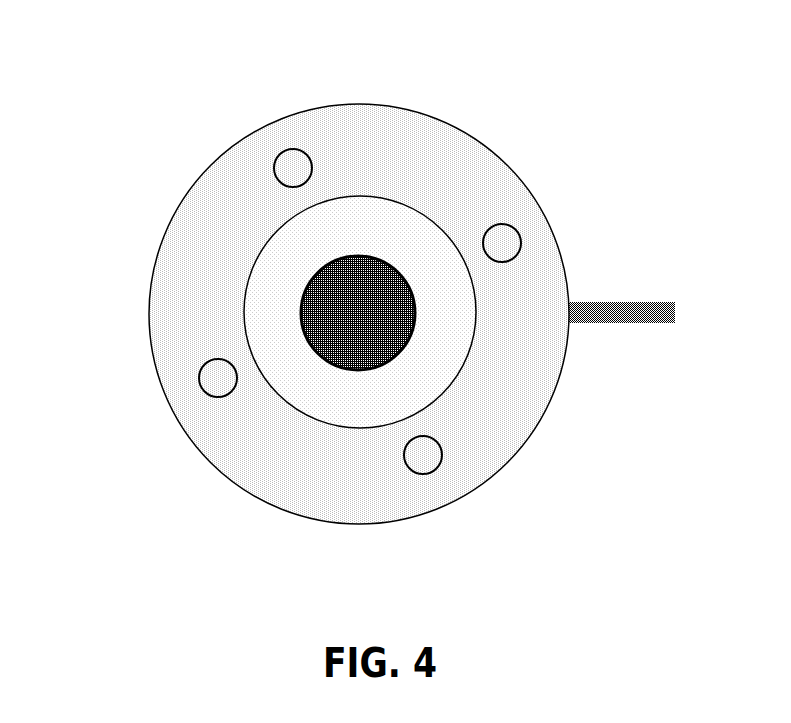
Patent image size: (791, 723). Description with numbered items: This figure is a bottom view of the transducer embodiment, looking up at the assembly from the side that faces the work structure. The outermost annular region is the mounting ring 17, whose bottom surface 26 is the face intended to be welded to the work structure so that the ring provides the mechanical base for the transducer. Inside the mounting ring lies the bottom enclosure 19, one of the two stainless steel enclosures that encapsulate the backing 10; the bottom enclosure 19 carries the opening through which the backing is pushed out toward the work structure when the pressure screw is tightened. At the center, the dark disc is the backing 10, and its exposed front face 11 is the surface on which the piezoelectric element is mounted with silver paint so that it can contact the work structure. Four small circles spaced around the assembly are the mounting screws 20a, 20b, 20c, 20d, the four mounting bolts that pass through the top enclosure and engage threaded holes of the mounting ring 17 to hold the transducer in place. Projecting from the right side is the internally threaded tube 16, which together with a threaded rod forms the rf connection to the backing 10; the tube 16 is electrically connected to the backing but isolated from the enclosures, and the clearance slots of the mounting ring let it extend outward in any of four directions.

The backing 10 is at (474, 346).
The front face of the backing 11 is at (480, 391).
The internally threaded tube 16 is at (659, 351).
The mounting ring 17 is at (363, 271).
The bottom enclosure 19 is at (411, 274).
The bottom surface of the mounting ring 26 is at (381, 301).
The mounting screw 20a is at (590, 243).
The mounting screw 20b is at (500, 498).
The mounting screw 20c is at (134, 397).
The mounting screw 20d is at (211, 148).